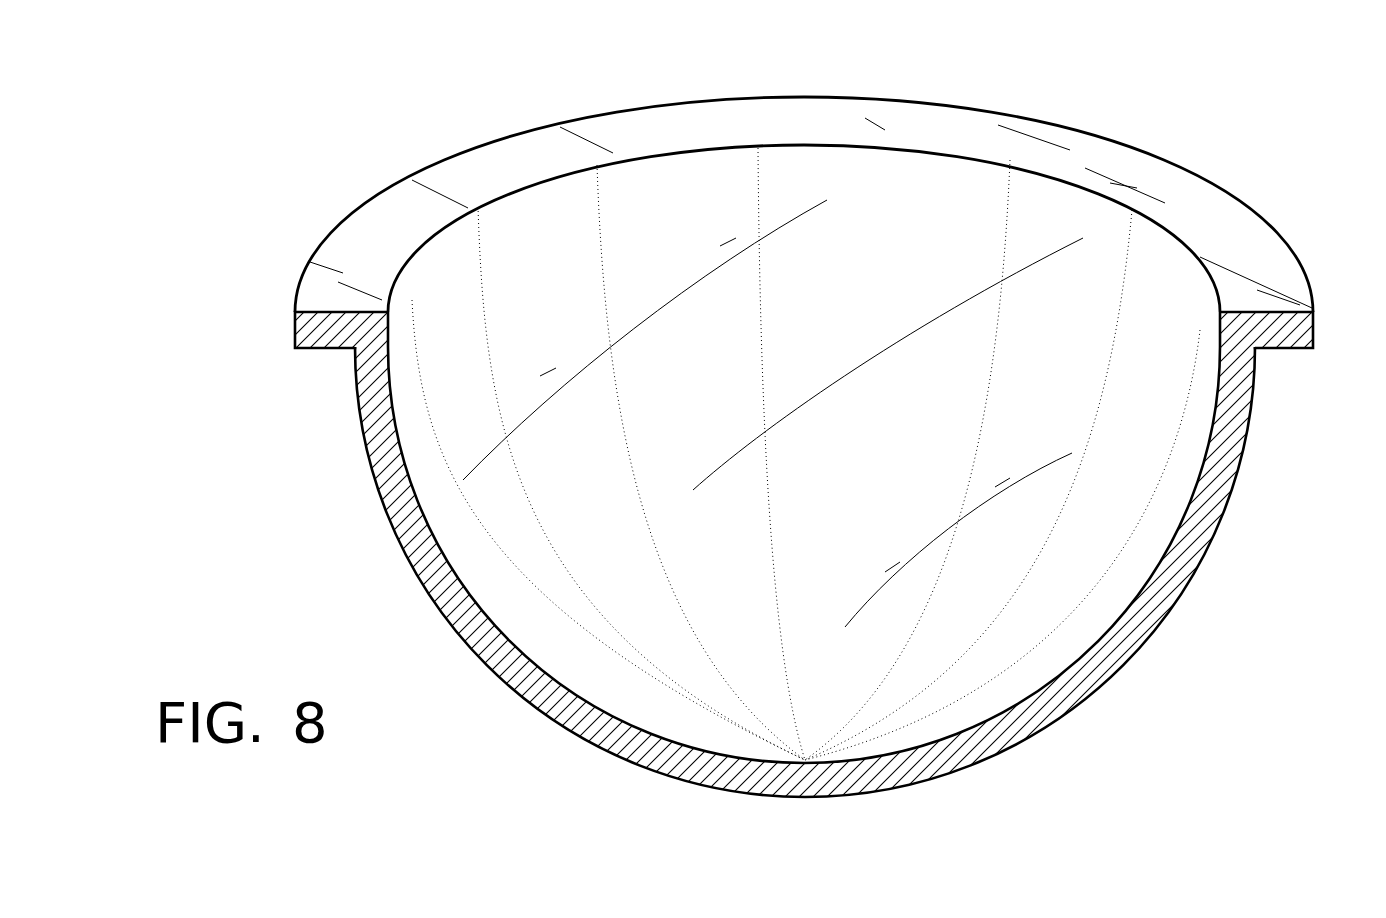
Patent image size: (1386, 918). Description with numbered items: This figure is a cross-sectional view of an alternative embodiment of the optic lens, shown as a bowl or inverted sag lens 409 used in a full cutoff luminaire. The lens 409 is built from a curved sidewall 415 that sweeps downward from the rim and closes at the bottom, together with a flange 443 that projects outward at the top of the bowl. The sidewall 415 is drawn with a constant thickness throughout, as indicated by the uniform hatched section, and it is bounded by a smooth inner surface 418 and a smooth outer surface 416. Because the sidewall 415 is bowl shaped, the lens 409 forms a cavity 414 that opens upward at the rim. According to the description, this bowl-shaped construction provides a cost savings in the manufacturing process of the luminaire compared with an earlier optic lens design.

The bowl or inverted sag lens 409 is at (1227, 152).
The cavity 414 is at (952, 156).
The sidewall 415 is at (429, 566).
The outer surface 416 is at (1247, 437).
The inner surface 418 is at (530, 223).
The flange 443 is at (293, 330).